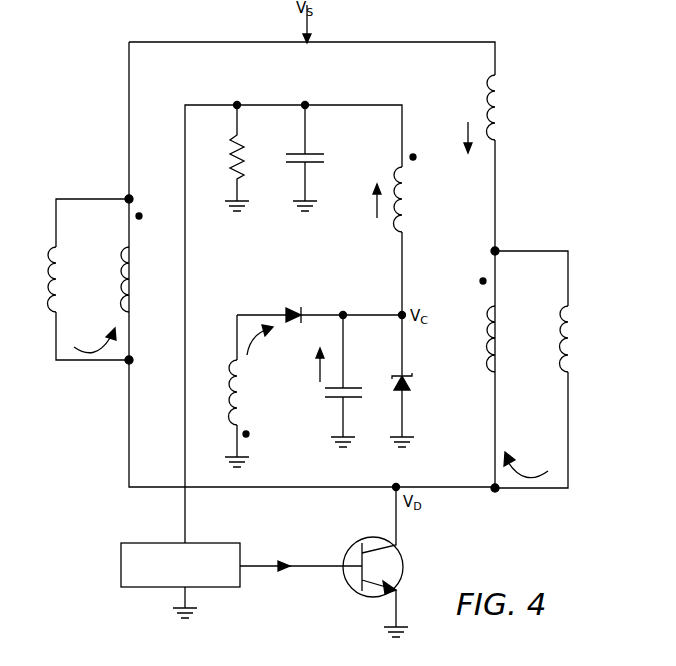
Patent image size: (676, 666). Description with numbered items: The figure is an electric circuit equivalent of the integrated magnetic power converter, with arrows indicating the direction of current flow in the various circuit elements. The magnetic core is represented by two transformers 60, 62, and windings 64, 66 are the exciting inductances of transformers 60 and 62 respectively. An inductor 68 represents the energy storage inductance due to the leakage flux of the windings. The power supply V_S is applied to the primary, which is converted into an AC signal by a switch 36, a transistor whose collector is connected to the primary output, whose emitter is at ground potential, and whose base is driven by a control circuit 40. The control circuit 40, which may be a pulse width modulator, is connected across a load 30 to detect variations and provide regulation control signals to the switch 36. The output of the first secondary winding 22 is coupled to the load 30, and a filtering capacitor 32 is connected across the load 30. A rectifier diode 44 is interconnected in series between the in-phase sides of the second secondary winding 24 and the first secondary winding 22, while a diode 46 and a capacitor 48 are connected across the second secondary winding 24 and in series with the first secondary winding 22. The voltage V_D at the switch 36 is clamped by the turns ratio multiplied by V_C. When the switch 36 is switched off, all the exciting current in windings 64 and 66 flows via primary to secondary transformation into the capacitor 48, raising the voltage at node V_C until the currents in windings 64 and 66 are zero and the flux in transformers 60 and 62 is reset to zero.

The first secondary winding 22 is at (410, 216).
The second secondary winding 24 is at (240, 386).
The load 30 is at (243, 150).
The filtering capacitor 32 is at (313, 153).
The switch 36 is at (402, 564).
The control circuit 40 is at (236, 591).
The diode 44 is at (296, 304).
The diode 46 is at (416, 385).
The capacitor 48 is at (348, 388).
The transformer 60 is at (73, 279).
The transformer 62 is at (550, 369).
The winding 64 is at (44, 285).
The winding 66 is at (566, 348).
The inductor 68 is at (487, 118).